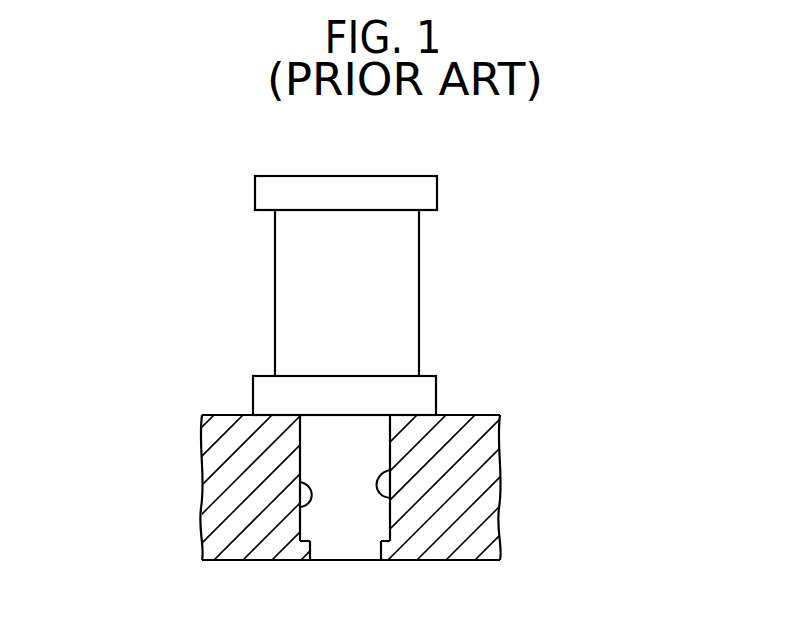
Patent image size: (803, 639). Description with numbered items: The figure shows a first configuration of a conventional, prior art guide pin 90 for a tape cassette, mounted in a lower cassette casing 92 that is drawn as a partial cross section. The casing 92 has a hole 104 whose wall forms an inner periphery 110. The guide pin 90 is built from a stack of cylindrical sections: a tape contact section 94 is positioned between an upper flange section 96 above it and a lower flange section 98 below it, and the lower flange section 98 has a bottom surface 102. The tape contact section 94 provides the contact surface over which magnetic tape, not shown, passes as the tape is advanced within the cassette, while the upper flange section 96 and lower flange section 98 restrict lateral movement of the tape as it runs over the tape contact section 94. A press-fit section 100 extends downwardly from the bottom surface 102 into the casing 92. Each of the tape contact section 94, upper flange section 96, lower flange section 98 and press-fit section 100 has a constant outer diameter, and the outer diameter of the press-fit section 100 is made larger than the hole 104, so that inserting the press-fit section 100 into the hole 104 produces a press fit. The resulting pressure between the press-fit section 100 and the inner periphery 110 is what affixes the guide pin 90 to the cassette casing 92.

The guide pin 90 is at (247, 162).
The lower cassette casing 92 is at (487, 527).
The tape contact section 94 is at (410, 298).
The upper flange section 96 is at (422, 200).
The lower flange section 98 is at (422, 393).
The press-fit section 100 is at (333, 526).
The bottom surface 102 is at (278, 419).
The hole 104 is at (382, 520).
The inner periphery 110 is at (299, 482).